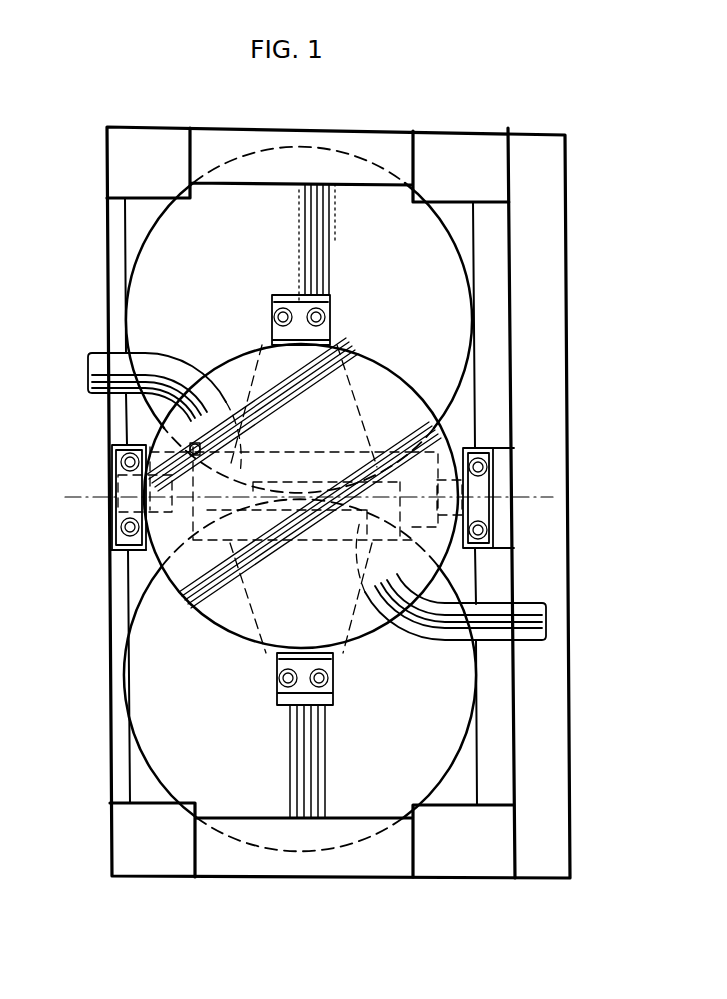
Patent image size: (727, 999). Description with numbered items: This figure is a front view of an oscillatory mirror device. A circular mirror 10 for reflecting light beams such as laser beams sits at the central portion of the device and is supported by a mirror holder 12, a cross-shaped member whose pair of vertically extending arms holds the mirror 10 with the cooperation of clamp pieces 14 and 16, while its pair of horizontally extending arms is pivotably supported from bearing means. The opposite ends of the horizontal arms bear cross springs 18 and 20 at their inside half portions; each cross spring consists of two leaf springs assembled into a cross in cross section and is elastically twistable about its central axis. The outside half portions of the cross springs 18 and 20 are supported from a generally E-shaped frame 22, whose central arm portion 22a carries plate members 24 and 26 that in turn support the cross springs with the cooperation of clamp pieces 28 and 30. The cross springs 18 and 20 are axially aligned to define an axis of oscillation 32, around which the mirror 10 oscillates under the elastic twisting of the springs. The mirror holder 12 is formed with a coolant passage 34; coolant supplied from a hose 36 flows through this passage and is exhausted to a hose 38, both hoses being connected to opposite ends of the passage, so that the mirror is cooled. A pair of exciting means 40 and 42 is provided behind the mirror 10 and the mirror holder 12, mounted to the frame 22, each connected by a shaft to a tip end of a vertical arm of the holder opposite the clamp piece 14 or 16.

The circular mirror 10 is at (414, 392).
The mirror holder 12 is at (287, 296).
The clamp piece 14 is at (317, 333).
The clamp piece 16 is at (323, 662).
The cross spring 18 is at (142, 426).
The cross spring 20 is at (446, 447).
The frame 22 is at (552, 189).
The central arm portion 22a is at (112, 456).
The plate member 24 is at (118, 531).
The plate member 26 is at (497, 531).
The clamp piece 28 is at (124, 553).
The clamp piece 30 is at (488, 548).
The axis of oscillation 32 is at (533, 497).
The coolant passage 34 is at (293, 518).
The hose 36 is at (106, 361).
The hose 38 is at (542, 624).
The exciting means 40 is at (148, 227).
The exciting means 42 is at (152, 767).